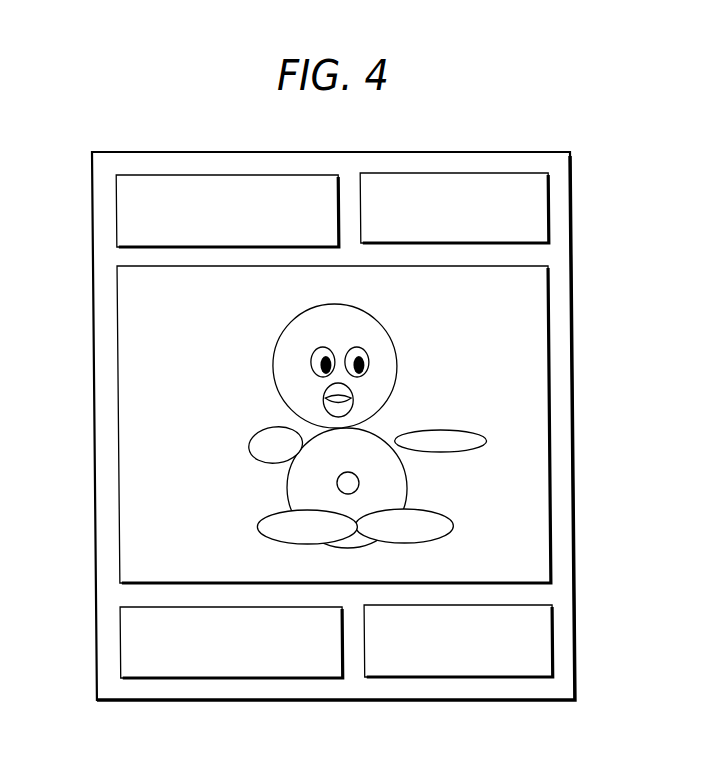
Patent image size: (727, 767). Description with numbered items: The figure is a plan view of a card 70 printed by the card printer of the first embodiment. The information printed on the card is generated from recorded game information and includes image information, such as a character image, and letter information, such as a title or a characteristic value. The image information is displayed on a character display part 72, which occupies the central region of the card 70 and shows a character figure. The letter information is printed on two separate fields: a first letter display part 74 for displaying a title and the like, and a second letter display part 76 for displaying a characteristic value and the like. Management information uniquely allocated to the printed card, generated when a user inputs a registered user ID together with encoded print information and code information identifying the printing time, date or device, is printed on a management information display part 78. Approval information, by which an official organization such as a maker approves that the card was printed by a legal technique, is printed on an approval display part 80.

The card 70 is at (572, 283).
The character display part 72 is at (528, 421).
The first letter display part 74 is at (116, 211).
The second letter display part 76 is at (116, 645).
The management information display part 78 is at (548, 637).
The approval display part 80 is at (548, 205).